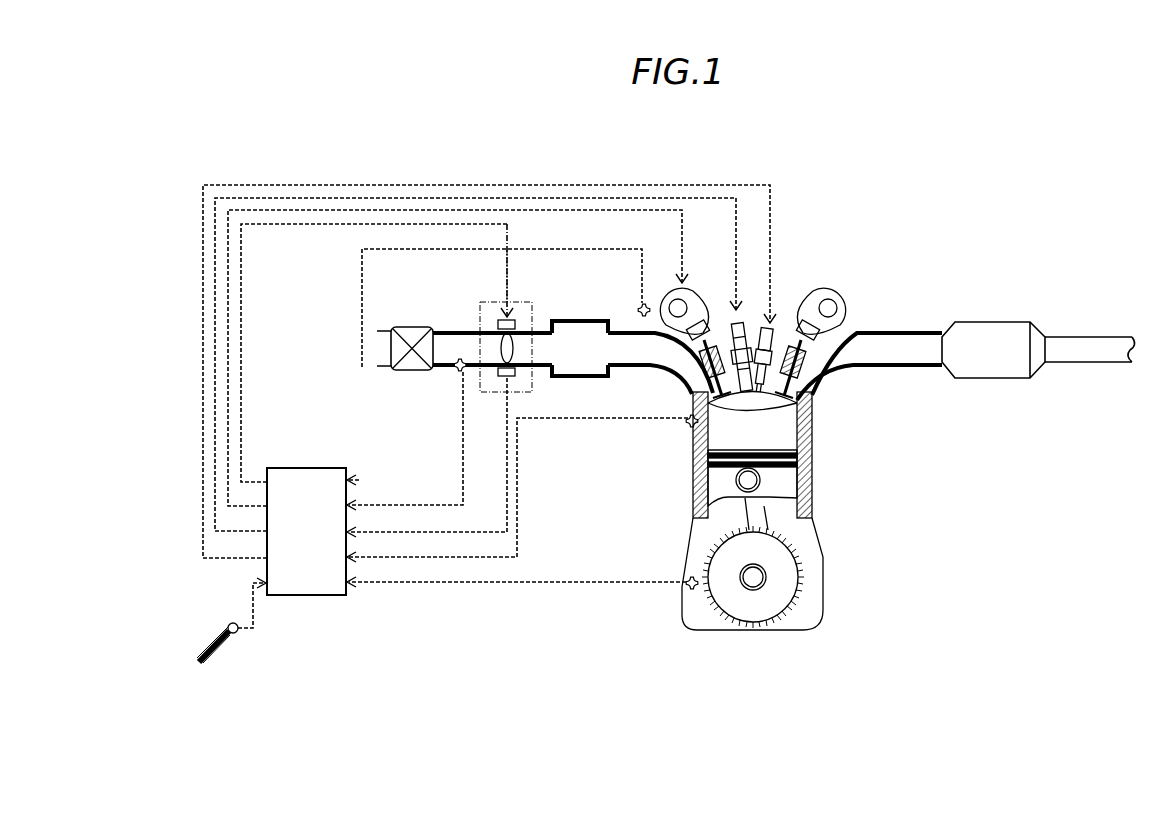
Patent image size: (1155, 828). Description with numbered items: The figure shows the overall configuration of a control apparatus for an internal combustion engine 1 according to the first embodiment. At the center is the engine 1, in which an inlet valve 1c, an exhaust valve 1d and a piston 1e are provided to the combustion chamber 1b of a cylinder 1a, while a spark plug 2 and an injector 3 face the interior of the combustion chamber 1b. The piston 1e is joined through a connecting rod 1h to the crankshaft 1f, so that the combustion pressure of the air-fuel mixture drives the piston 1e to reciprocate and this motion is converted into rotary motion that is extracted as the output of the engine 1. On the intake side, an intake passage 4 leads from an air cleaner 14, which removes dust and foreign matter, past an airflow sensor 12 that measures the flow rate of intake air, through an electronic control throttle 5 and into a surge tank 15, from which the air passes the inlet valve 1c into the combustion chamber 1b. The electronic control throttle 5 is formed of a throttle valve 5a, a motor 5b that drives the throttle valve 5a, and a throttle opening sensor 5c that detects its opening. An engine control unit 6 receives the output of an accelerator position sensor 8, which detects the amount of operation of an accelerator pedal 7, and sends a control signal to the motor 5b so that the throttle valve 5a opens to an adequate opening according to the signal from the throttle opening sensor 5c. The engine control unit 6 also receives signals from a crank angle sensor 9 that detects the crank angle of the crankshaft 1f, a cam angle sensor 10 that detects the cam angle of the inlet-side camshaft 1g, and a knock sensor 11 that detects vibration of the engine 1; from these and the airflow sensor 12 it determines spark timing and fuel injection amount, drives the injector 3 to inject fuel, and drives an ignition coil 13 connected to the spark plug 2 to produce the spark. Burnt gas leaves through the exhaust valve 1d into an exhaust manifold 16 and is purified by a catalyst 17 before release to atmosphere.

The internal combustion engine 1 is at (775, 468).
The cylinder 1a is at (797, 453).
The combustion chamber 1b is at (718, 442).
The inlet valve 1c is at (693, 396).
The exhaust valve 1d is at (814, 396).
The piston 1e is at (718, 480).
The crankshaft 1f is at (770, 576).
The camshaft 1g is at (689, 292).
The connecting rod 1h is at (824, 553).
The spark plug 2 is at (750, 403).
The injector 3 is at (808, 292).
The intake passage 4 is at (458, 331).
The electronic control throttle 5 is at (518, 332).
The throttle valve 5a is at (514, 350).
The motor 5b is at (516, 324).
The throttle opening sensor 5c is at (516, 372).
The engine control unit 6 is at (305, 596).
The accelerator pedal 7 is at (215, 634).
The accelerator position sensor 8 is at (229, 622).
The crank angle sensor 9 is at (672, 600).
The cam angle sensor 10 is at (639, 306).
The knock sensor 11 is at (689, 427).
The airflow sensor 12 is at (455, 367).
The ignition coil 13 is at (742, 322).
The air cleaner 14 is at (414, 327).
The surge tank 15 is at (583, 378).
The exhaust manifold 16 is at (905, 331).
The catalyst 17 is at (990, 380).